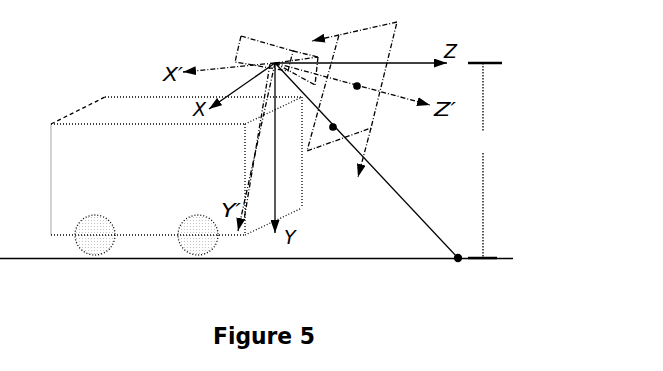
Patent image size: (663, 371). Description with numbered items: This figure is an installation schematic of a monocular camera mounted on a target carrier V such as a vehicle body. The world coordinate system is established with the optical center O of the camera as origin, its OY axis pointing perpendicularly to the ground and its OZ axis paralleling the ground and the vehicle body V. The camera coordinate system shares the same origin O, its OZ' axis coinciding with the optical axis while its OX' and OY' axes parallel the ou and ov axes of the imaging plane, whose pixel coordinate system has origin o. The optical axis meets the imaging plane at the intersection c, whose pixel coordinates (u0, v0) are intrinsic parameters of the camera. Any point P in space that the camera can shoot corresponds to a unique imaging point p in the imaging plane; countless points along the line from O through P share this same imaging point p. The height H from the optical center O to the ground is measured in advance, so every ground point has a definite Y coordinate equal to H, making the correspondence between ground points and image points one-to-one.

The optical center O is at (276, 60).
The pixel coordinate system origin o is at (354, 98).
The intersection of the optical axis and the imaging plane c is at (394, 100).
The imaging point p is at (366, 140).
The point in space P is at (416, 175).
The height from the optical center to the ground H is at (485, 160).
The vehicle V is at (176, 176).